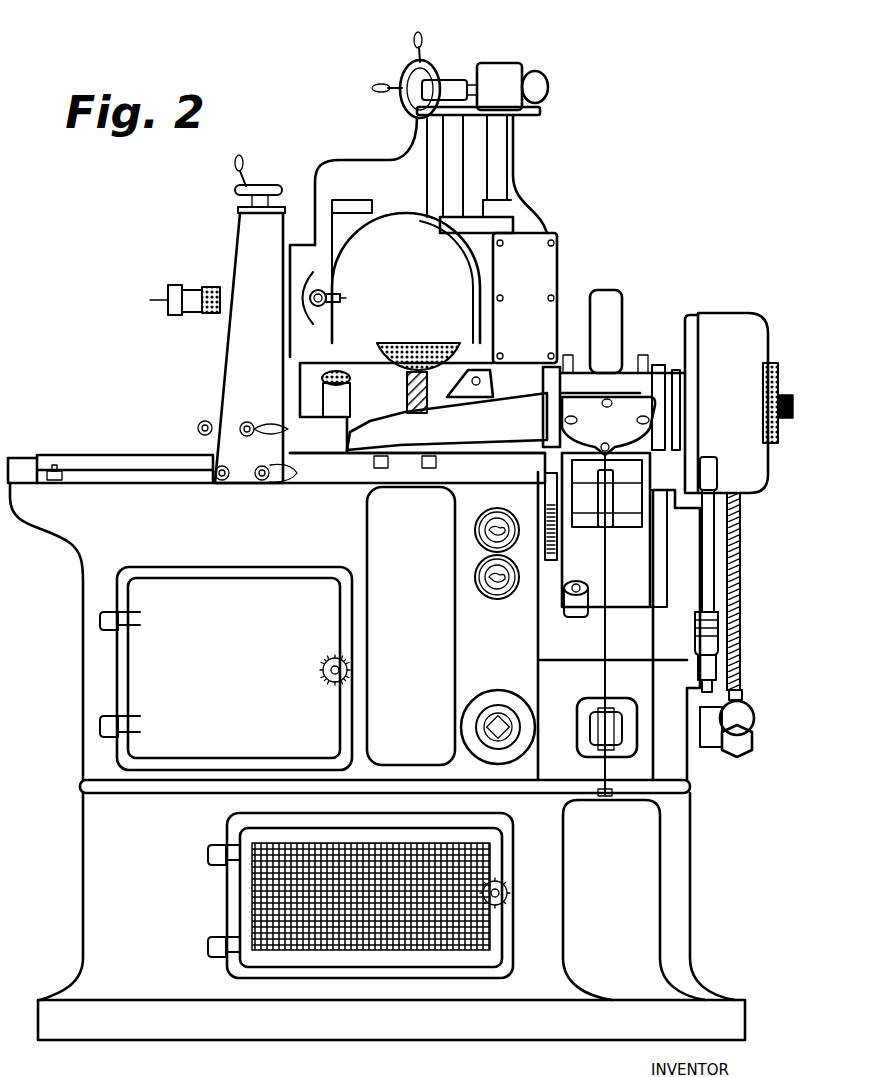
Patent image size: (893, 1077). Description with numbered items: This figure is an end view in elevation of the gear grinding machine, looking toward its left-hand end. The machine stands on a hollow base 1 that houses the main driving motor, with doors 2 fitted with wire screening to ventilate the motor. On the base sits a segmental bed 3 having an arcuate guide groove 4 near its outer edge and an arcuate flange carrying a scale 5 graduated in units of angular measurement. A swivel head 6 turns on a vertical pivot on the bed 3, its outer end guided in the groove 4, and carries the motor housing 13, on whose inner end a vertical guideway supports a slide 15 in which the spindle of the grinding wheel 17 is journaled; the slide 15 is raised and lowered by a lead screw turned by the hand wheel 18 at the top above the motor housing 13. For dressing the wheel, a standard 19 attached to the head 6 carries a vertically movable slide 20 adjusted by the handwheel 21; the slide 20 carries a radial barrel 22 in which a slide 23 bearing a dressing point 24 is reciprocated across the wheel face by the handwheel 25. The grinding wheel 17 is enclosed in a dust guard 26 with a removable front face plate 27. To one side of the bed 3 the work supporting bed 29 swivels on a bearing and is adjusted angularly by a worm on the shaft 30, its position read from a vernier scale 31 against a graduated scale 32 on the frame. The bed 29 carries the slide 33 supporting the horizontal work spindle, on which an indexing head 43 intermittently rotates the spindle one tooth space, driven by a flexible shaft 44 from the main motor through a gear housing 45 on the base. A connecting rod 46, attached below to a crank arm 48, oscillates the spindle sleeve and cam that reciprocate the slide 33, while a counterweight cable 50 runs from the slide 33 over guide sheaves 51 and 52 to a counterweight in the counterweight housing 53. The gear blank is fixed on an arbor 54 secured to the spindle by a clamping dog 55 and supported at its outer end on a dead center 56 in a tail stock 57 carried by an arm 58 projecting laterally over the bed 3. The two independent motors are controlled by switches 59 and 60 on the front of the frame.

The hollow base 1 is at (97, 932).
The doors 2 is at (493, 858).
The bed 3 is at (50, 517).
The arcuate guide groove 4 is at (56, 481).
The scale 5 is at (18, 456).
The swivel head 6 is at (310, 472).
The motor housing 13 is at (350, 173).
The slide 15 is at (527, 243).
The grinding wheel 17 is at (425, 352).
The hand wheel 18 is at (428, 68).
The standard 19 is at (243, 238).
The vertically movable slide 20 is at (292, 250).
The handwheel 21 is at (254, 185).
The barrel 22 is at (186, 302).
The slide 23 is at (312, 291).
The dressing point 24 is at (332, 297).
The handwheel 25 is at (212, 283).
The dust guard 26 is at (467, 283).
The front face plate 27 is at (400, 228).
The work supporting bed 29 is at (636, 578).
The shaft 30 is at (575, 600).
The vernier scale 31 is at (553, 538).
The graduated scale 32 is at (548, 517).
The slide 33 is at (603, 393).
The indexing head 43 is at (745, 326).
The flexible shaft 44 is at (731, 626).
The gear housing 45 is at (708, 738).
The connecting rod 46 is at (706, 521).
The crank arm 48 is at (692, 584).
The counterweight cable 50 is at (609, 680).
The guide sheave 51 is at (616, 521).
The guide sheave 52 is at (616, 712).
The counterweight housing 53 is at (645, 847).
The arbor 54 is at (417, 404).
The clamping dog 55 is at (498, 378).
The dead center 56 is at (379, 421).
The tail stock 57 is at (358, 404).
The arm 58 is at (467, 427).
The switch 59 is at (497, 528).
The switch 60 is at (497, 582).